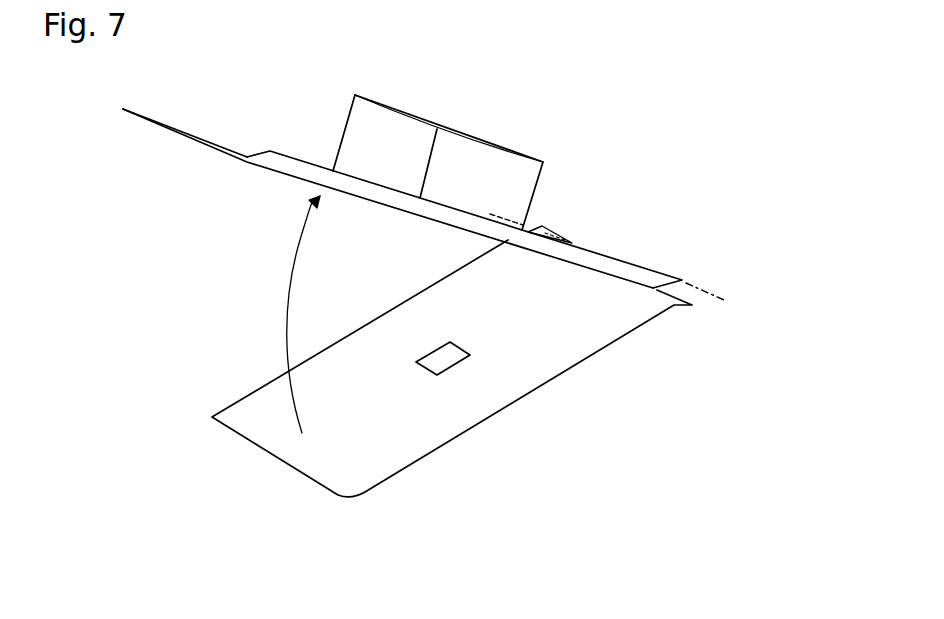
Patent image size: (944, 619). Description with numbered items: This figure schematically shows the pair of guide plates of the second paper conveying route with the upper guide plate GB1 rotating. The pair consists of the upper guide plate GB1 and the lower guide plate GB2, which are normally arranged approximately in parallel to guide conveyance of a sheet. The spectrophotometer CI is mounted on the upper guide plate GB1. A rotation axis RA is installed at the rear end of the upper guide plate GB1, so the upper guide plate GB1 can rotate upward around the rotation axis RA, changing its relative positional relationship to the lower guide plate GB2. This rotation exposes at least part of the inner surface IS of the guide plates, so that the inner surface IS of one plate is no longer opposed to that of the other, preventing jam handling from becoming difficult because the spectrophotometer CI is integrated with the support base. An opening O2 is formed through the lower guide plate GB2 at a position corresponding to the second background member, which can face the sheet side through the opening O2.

The upper guide plate GB1 is at (239, 152).
The lower guide plate GB2 is at (390, 457).
The spectrophotometer CI is at (512, 163).
The inner surface IS is at (292, 188).
The opening O2 is at (453, 363).
The rotation axis RA is at (707, 290).